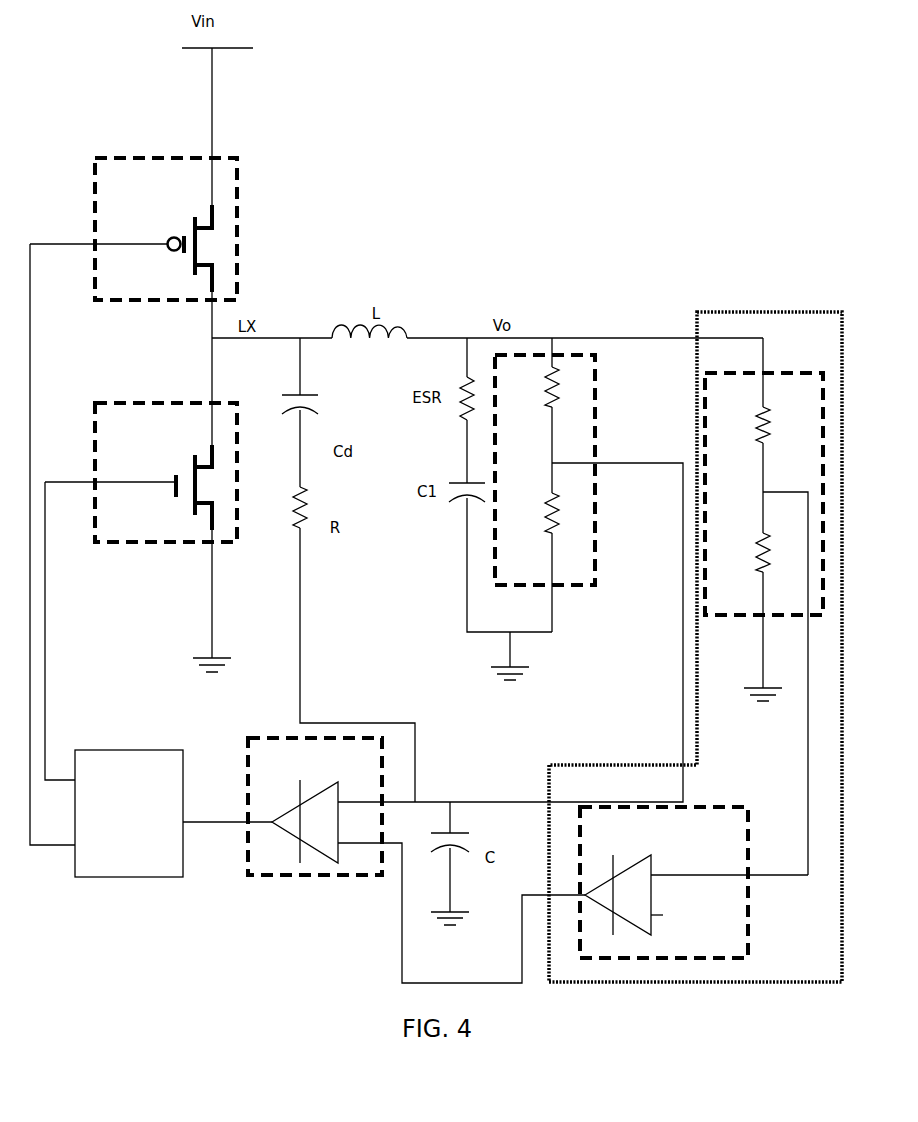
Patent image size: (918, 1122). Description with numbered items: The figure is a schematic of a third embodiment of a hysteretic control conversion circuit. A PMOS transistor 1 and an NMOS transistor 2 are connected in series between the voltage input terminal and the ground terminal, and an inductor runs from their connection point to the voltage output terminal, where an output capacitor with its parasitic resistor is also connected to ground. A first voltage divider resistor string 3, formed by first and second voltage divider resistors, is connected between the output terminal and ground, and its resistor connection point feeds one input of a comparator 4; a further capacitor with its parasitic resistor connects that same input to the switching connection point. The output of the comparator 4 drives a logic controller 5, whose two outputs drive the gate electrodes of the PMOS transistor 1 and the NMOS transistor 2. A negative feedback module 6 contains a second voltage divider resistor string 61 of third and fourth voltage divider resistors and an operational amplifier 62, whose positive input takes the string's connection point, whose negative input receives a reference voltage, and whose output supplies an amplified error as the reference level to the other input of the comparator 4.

The PMOS transistor 1 is at (234, 208).
The NMOS transistor 2 is at (234, 453).
The first voltage divider resistor string 3 is at (596, 392).
The comparator 4 is at (253, 789).
The logic controller 5 is at (180, 784).
The negative feedback module 6 is at (832, 400).
The second voltage divider resistor string 61 is at (820, 450).
The operational amplifier 62 is at (744, 850).